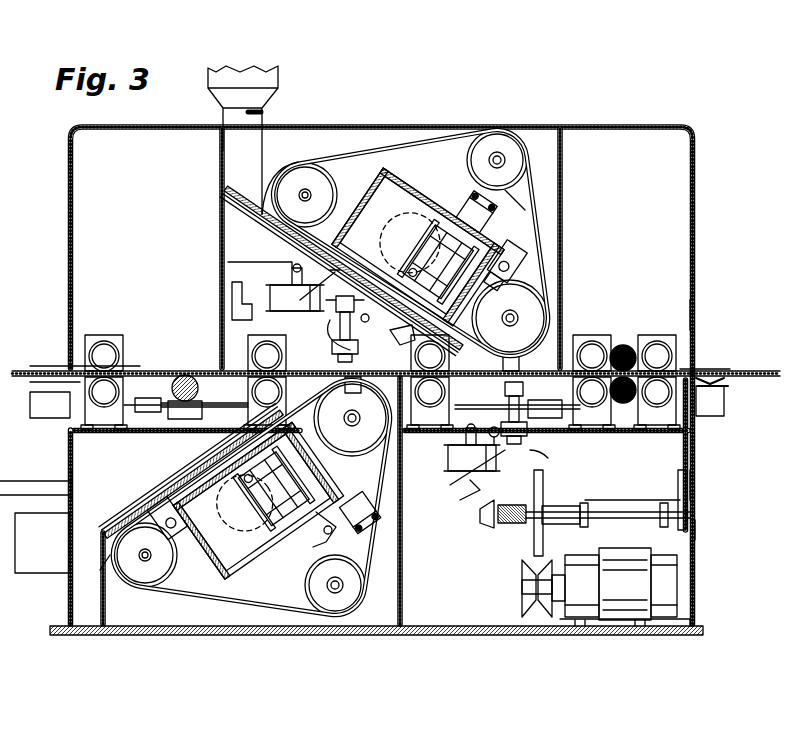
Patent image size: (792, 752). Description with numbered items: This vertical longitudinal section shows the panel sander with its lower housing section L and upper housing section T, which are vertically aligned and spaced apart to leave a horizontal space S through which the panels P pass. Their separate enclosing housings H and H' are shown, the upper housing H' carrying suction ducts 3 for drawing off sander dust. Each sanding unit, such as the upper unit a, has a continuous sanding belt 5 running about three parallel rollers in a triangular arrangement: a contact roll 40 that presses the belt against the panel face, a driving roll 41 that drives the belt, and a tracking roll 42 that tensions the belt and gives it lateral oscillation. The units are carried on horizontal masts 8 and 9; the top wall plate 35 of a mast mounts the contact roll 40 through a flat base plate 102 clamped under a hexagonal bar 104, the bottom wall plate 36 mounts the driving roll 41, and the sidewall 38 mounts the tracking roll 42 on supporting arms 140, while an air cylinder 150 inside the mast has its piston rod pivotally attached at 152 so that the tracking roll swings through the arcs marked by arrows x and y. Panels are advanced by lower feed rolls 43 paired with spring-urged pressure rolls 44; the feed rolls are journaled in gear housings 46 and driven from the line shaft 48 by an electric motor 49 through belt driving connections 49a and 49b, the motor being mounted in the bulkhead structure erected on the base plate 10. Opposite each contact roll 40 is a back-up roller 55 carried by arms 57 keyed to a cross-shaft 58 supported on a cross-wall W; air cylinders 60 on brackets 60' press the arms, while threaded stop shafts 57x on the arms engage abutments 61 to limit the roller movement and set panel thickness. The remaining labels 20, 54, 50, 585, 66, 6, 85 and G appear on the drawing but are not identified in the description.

The suction duct 3 is at (262, 110).
The sanding belt 5 is at (398, 130).
The housing top 20 is at (590, 127).
The flat base plate 102 is at (343, 200).
The sidewall plate 38 is at (418, 177).
The mast 8 is at (436, 190).
The pivotal attachment 152 is at (468, 205).
The tracking roll 42 is at (510, 162).
The hexagonal bar 104 is at (525, 207).
The driving roll 41 is at (288, 196).
The air cylinder 60 is at (403, 365).
The bracket 60' is at (232, 269).
The mounting bracket 54 is at (232, 292).
The cross-shaft 58 is at (248, 314).
The air cylinder 150 is at (492, 243).
The pressure roll 44 is at (116, 352).
The lower feed roll 43 is at (100, 408).
The arm 57 is at (336, 341).
The stop shaft 57x is at (532, 460).
The back-up roller 55 is at (376, 345).
The contact roll 40 is at (536, 308).
The abutment 61 is at (520, 322).
The gear housing 46 is at (114, 418).
The line shaft 48 is at (180, 418).
The mast 9 is at (200, 474).
The bottom wall plate 36 is at (204, 543).
The top wall plate 35 is at (333, 495).
The supporting arm 140 is at (334, 512).
The valve stem 585 is at (494, 444).
The belt driving connection 49a is at (534, 544).
The electric motor 49 is at (568, 616).
The base plate 10 is at (622, 632).
The drive shaft 50 is at (593, 524).
The belt driving connection 49b is at (678, 469).
The spring 66 is at (486, 523).
The lever 6 is at (464, 506).
The guide 85 is at (728, 409).
The upper housing section T is at (699, 264).
The housing H is at (372, 478).
The upper housing H' is at (713, 313).
The panel P is at (176, 366).
The horizontal space S is at (680, 367).
The guide block G is at (728, 392).
The lower housing section L is at (700, 524).
The supporting cross-wall W is at (215, 245).
The sanding unit a is at (538, 228).
The arcuate arrow x is at (484, 160).
The arcuate arrow y is at (320, 585).